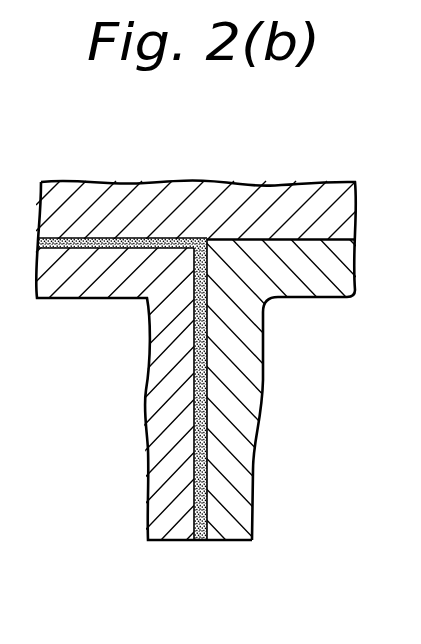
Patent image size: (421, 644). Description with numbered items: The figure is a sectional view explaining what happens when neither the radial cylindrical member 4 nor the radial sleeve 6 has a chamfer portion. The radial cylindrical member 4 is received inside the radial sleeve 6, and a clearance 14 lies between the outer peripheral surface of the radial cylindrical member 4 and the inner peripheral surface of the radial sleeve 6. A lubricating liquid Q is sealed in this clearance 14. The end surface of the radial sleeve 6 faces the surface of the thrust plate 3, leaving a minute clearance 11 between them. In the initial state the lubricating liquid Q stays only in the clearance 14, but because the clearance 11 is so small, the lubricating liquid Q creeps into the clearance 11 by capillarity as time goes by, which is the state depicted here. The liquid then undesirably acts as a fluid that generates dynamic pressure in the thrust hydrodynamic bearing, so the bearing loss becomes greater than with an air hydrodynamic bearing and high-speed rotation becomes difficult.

The thrust plate 3 is at (229, 207).
The radial cylindrical member 4 is at (243, 388).
The radial sleeve 6 is at (147, 301).
The clearance 11 is at (81, 237).
The clearance 14 is at (203, 452).
The lubricating liquid Q is at (198, 543).